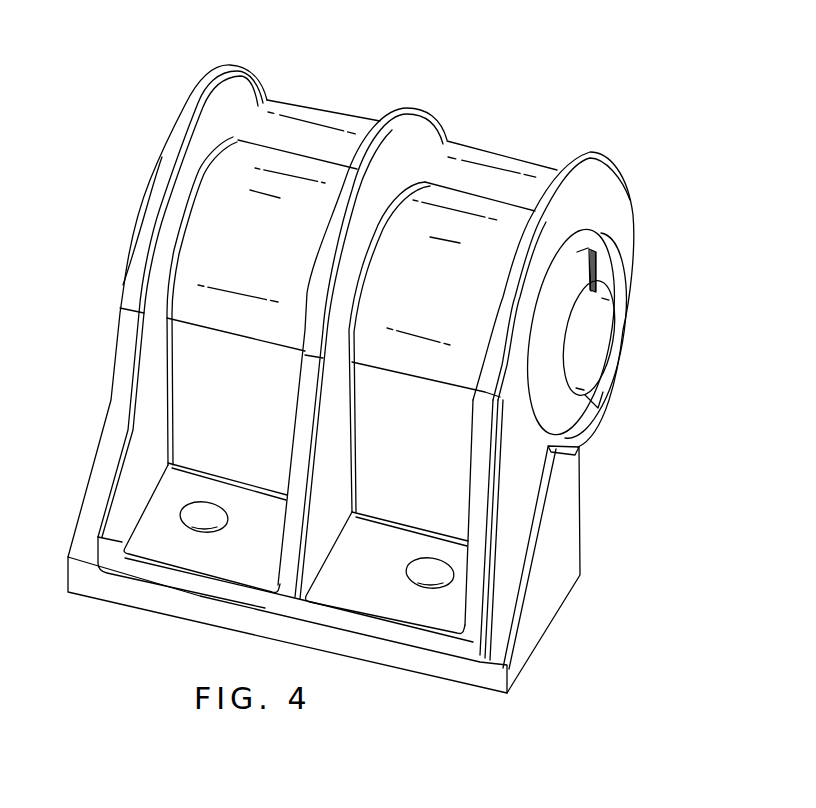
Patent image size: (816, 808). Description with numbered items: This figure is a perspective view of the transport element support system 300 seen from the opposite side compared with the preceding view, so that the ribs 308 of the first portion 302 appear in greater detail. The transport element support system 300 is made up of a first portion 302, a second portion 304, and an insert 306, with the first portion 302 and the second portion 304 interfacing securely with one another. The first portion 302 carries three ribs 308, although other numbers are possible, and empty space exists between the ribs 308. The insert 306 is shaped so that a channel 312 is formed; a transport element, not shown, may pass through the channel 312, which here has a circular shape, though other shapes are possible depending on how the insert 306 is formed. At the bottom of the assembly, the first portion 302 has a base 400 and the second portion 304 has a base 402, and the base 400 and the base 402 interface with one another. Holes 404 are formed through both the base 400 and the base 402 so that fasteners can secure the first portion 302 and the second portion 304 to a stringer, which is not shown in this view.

The transport element support system 300 is at (543, 114).
The first portion 302 is at (622, 200).
The second portion 304 is at (548, 617).
The insert 306 is at (610, 270).
The ribs 308 is at (238, 66).
The channel 312 is at (594, 348).
The base 400 is at (125, 352).
The base 402 is at (385, 658).
The holes 404 is at (205, 515).